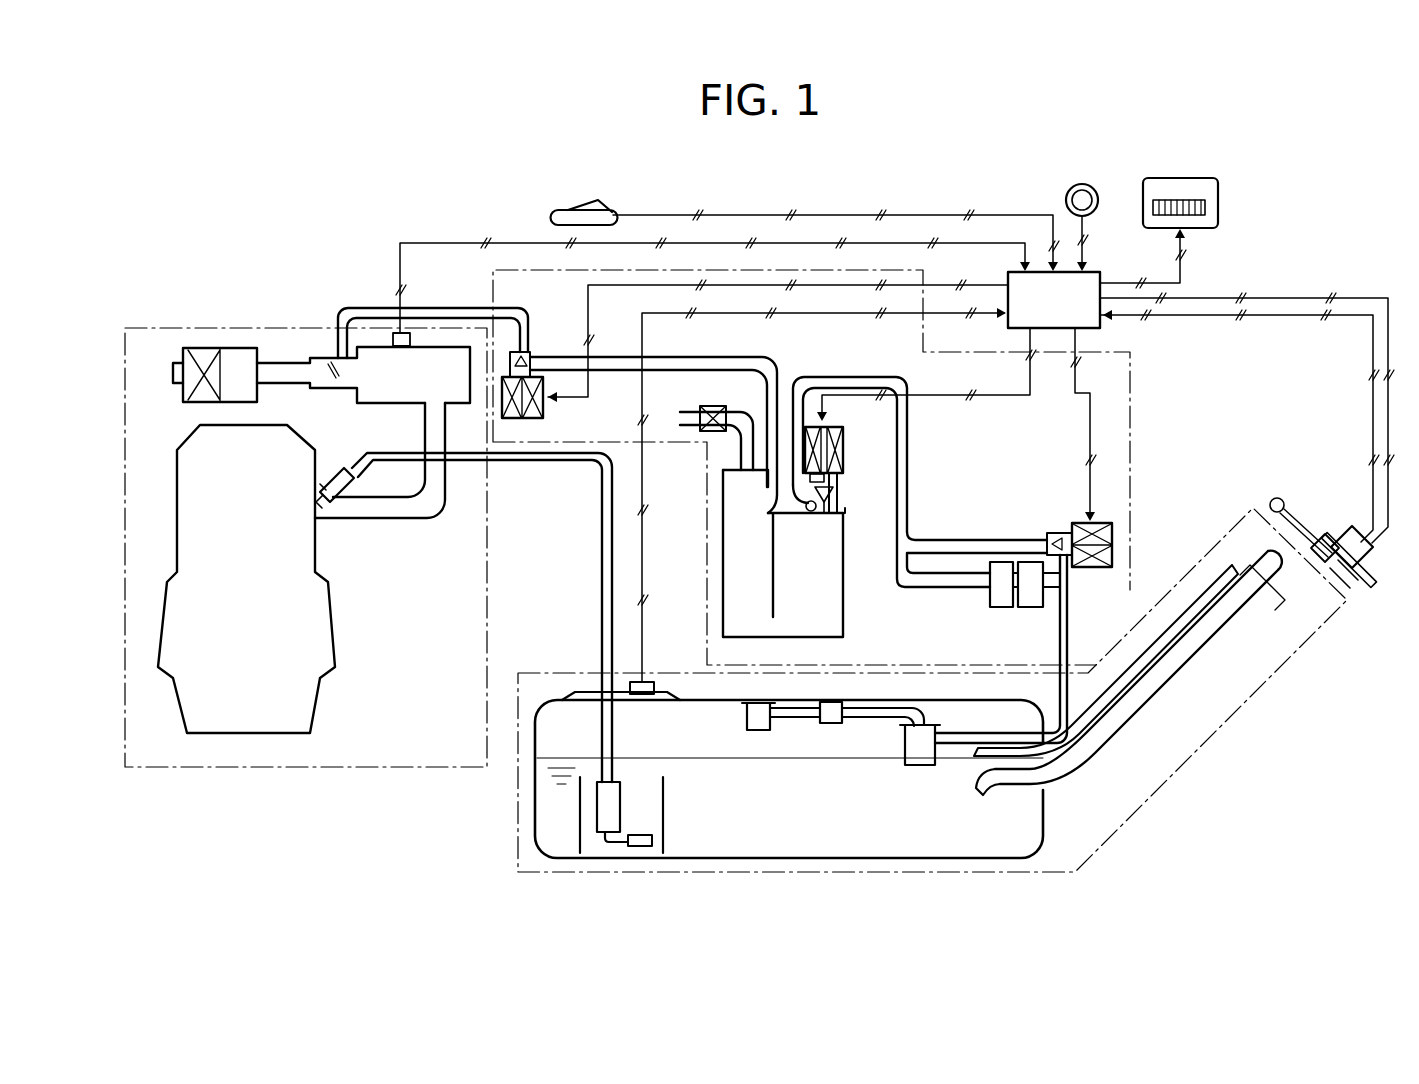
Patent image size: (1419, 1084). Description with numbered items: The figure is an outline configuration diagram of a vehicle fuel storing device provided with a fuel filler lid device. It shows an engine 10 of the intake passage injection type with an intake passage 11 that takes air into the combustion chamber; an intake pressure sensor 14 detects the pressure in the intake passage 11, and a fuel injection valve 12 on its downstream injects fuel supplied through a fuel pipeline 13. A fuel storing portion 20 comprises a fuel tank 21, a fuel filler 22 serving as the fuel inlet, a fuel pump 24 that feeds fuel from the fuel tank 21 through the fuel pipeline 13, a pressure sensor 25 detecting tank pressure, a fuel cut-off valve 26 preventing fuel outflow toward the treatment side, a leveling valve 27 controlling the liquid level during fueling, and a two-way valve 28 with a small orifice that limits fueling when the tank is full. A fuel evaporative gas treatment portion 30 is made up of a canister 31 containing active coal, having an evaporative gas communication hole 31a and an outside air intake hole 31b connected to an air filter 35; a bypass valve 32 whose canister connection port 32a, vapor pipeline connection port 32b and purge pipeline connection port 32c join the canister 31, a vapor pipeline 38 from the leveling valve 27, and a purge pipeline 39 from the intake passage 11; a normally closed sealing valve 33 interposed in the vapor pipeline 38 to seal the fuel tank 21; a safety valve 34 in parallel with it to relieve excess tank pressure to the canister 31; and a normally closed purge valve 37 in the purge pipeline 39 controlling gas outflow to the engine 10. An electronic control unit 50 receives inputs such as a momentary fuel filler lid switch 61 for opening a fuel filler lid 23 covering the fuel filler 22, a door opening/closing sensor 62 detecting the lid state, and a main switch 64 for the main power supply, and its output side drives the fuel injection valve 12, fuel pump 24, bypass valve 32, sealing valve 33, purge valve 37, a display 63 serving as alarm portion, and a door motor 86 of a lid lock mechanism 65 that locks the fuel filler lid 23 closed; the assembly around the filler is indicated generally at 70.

The engine 10 is at (203, 328).
The intake passage 11 is at (283, 358).
The fuel injection valve 12 is at (342, 466).
The fuel pipeline 13 is at (530, 462).
The intake pressure sensor 14 is at (398, 333).
The fuel storing portion 20 is at (1222, 728).
The fuel tank 21 is at (795, 858).
The fuel filler 22 is at (1285, 580).
The fuel filler lid 23 is at (1291, 506).
The fuel pump 24 is at (663, 790).
The pressure sensor 25 is at (648, 682).
The fuel cut-off valve 26 is at (747, 716).
The leveling valve 27 is at (918, 765).
The 2-way valve 28 is at (840, 712).
The fuel evaporative gas treatment portion 30 is at (1130, 375).
The canister 31 is at (845, 612).
The evaporative gas communication hole 31a is at (838, 516).
The outside air intake hole 31b is at (723, 485).
The bypass valve 32 is at (840, 428).
The canister connection port 32a is at (833, 495).
The vapor pipeline connection port 32b is at (843, 469).
The purge pipeline connection port 32c is at (812, 510).
The sealing valve 33 is at (1112, 530).
The safety valve 34 is at (990, 600).
The air filter 35 is at (712, 406).
The purge valve 37 is at (548, 402).
The vapor pipeline 38 is at (843, 377).
The purge pipeline 39 is at (618, 357).
The electronic control unit 50 is at (1098, 272).
The fuel filler lid switch 61 is at (588, 204).
The door opening/closing sensor 62 is at (1345, 528).
The display 63 is at (1196, 230).
The main switch 64 is at (1064, 196).
The lid lock mechanism 65 is at (1348, 588).
The fuel filler opening assembly 70 is at (1327, 470).
The door motor 86 is at (1366, 578).